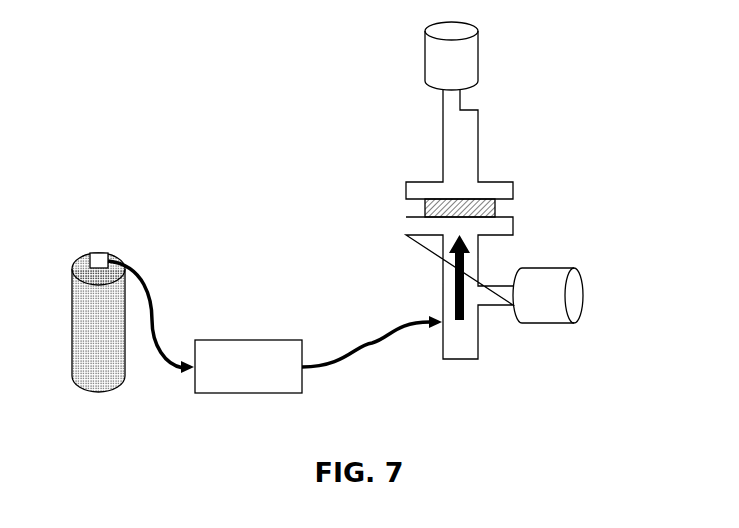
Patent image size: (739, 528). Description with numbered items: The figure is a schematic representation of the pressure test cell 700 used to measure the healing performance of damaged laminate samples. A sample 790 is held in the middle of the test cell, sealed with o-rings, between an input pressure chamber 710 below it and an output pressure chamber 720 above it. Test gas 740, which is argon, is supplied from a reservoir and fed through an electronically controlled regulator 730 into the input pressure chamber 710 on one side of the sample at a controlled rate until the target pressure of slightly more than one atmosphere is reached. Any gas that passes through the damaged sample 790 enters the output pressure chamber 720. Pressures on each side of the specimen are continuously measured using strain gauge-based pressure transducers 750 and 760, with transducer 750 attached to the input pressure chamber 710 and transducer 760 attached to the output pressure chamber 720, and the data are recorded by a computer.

The pressure test cell 700 is at (300, 123).
The input pressure chamber 710 is at (432, 284).
The output pressure chamber 720 is at (434, 139).
The electronically controlled regulator 730 is at (230, 378).
The test gas 740 is at (104, 292).
The pressure transducer 750 is at (550, 277).
The pressure transducer 760 is at (468, 65).
The sample 790 is at (417, 206).